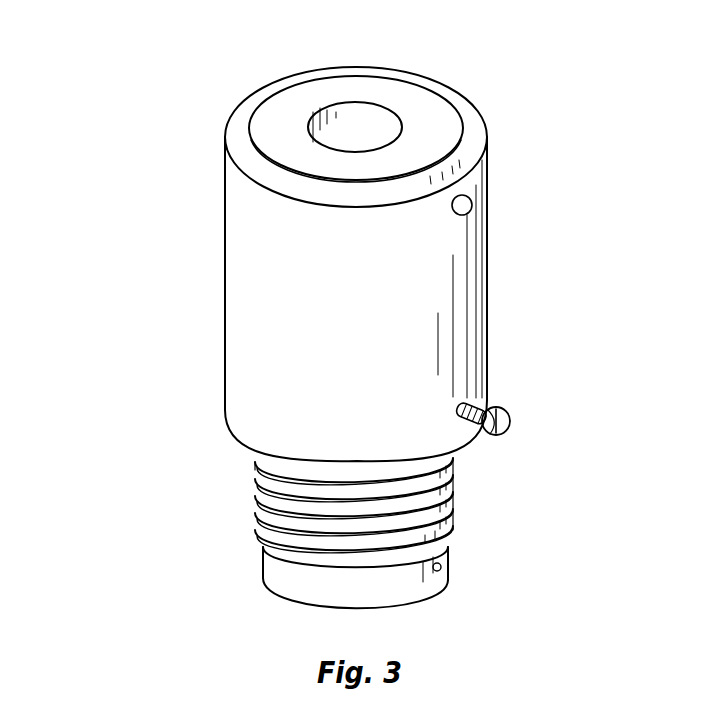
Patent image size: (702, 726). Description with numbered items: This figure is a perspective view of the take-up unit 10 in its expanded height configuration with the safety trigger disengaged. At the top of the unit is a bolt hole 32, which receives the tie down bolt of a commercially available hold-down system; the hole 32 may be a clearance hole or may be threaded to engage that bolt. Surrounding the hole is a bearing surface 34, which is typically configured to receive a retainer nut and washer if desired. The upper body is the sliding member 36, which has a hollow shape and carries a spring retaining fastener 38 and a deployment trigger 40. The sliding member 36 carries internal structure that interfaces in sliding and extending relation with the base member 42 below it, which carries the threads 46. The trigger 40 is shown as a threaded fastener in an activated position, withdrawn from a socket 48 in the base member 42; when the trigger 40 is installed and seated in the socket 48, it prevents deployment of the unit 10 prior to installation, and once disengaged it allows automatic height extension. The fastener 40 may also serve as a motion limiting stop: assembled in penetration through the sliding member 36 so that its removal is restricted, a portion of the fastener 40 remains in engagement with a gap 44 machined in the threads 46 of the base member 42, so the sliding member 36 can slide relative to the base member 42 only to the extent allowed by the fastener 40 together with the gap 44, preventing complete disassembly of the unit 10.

The take-up unit 10 is at (324, 320).
The bolt hole 32 is at (368, 140).
The bearing surface 34 is at (430, 113).
The sliding member 36 is at (243, 342).
The spring retaining fastener 38 is at (471, 200).
The deployment trigger 40 is at (511, 413).
The base member 42 is at (360, 577).
The gap 44 is at (346, 505).
The threads 46 is at (455, 518).
The socket 48 is at (442, 568).